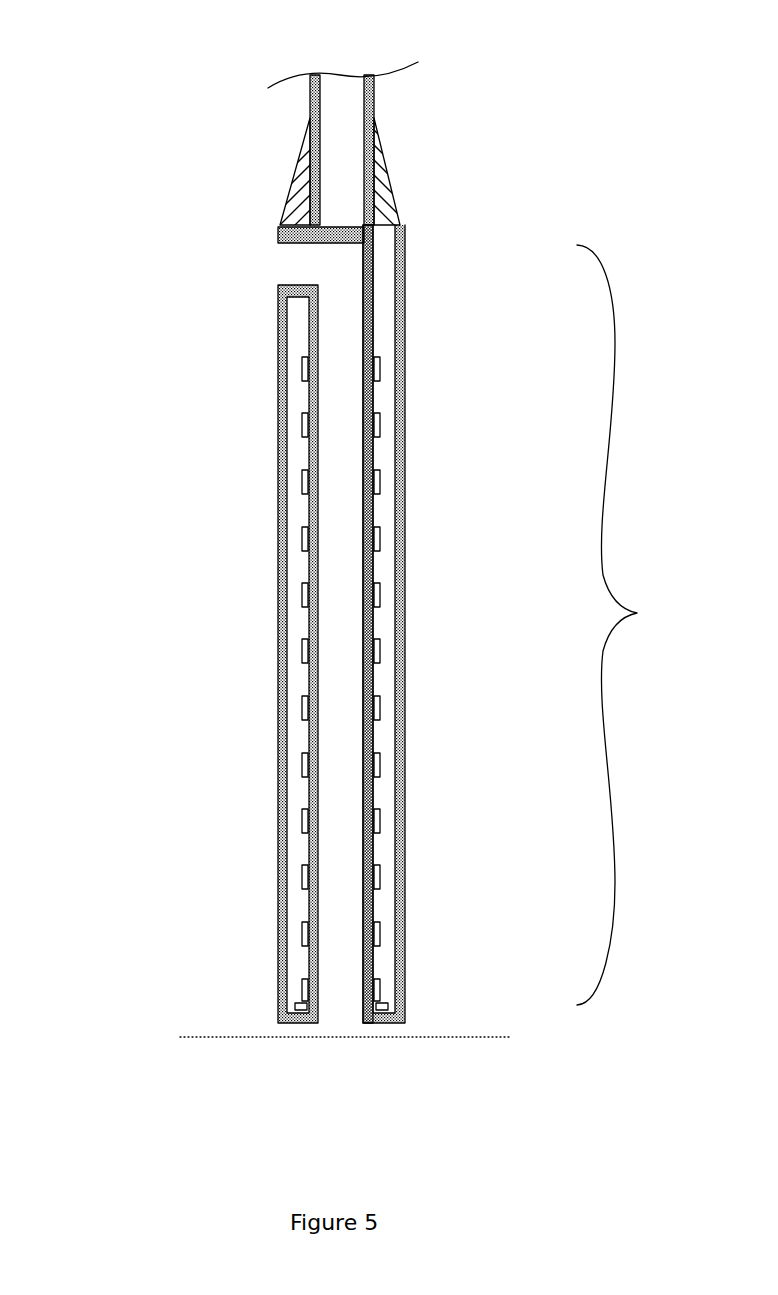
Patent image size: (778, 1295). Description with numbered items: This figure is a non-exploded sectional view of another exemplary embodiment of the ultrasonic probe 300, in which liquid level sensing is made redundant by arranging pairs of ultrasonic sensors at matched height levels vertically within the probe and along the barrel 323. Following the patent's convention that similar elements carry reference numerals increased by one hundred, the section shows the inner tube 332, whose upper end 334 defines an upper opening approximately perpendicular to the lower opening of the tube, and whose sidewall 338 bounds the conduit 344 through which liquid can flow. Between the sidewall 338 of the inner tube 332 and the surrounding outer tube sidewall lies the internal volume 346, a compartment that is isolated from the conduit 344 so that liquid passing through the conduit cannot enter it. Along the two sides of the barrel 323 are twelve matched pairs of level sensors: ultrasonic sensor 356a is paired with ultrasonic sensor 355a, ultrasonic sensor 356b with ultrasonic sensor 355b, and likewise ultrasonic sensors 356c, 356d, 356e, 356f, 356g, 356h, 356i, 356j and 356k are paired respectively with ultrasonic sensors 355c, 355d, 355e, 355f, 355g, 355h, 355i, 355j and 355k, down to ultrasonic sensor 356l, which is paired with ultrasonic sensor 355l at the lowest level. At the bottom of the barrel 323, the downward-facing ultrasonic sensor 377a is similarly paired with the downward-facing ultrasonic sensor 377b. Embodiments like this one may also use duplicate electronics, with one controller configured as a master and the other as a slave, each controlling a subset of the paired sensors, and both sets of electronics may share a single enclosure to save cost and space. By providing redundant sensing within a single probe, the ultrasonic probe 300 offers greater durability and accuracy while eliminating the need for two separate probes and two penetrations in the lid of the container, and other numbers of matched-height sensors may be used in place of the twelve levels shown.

The ultrasonic probe 300 is at (126, 108).
The barrel 323 is at (634, 625).
The inner tube 332 is at (385, 215).
The upper end 334 is at (292, 280).
The sidewall 338 is at (372, 522).
The conduit 344 is at (345, 312).
The internal volume 346 is at (382, 262).
The ultrasonic sensor 355a is at (302, 371).
The ultrasonic sensor 355b is at (302, 427).
The ultrasonic sensor 355c is at (302, 484).
The ultrasonic sensor 355d is at (302, 541).
The ultrasonic sensor 355e is at (302, 597).
The ultrasonic sensor 355f is at (302, 653).
The ultrasonic sensor 355g is at (302, 710).
The ultrasonic sensor 355h is at (302, 767).
The ultrasonic sensor 355i is at (302, 823).
The ultrasonic sensor 355j is at (302, 879).
The ultrasonic sensor 355k is at (302, 936).
The ultrasonic sensor 355l is at (302, 993).
The ultrasonic sensor 356a is at (380, 369).
The ultrasonic sensor 356b is at (380, 425).
The ultrasonic sensor 356c is at (380, 482).
The ultrasonic sensor 356d is at (380, 539).
The ultrasonic sensor 356e is at (380, 595).
The ultrasonic sensor 356f is at (380, 651).
The ultrasonic sensor 356g is at (380, 708).
The ultrasonic sensor 356h is at (380, 765).
The ultrasonic sensor 356i is at (380, 821).
The ultrasonic sensor 356j is at (380, 877).
The ultrasonic sensor 356k is at (380, 934).
The ultrasonic sensor 356l is at (380, 991).
The downward-facing ultrasonic sensor 377a is at (388, 1006).
The downward-facing ultrasonic sensor 377b is at (296, 1006).